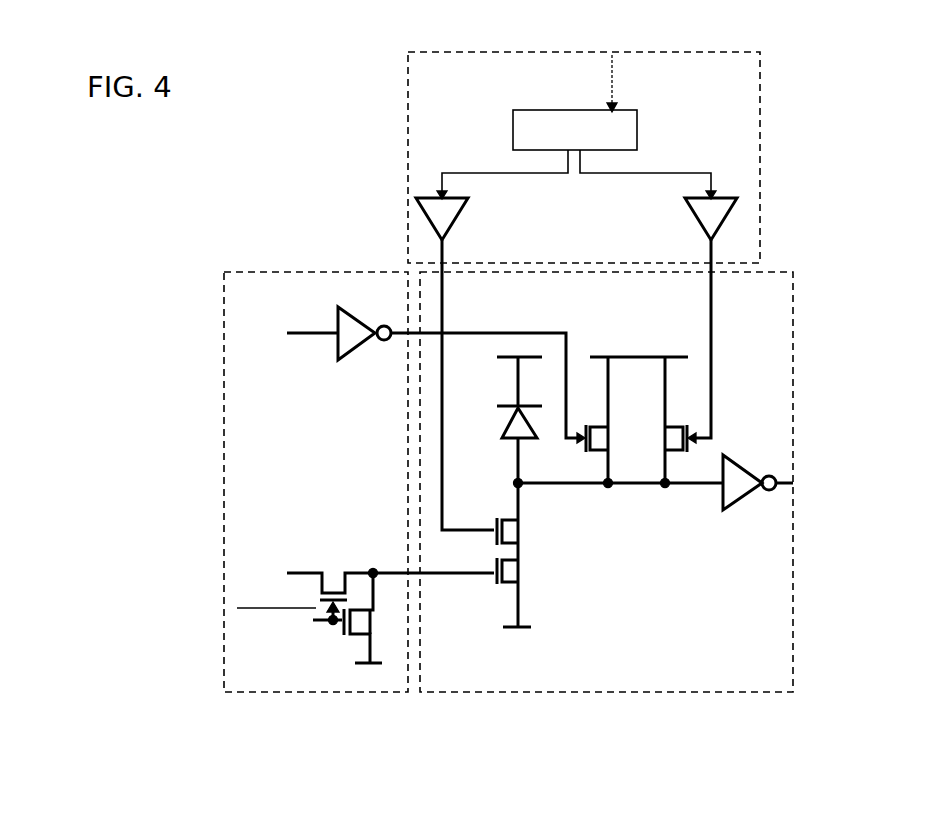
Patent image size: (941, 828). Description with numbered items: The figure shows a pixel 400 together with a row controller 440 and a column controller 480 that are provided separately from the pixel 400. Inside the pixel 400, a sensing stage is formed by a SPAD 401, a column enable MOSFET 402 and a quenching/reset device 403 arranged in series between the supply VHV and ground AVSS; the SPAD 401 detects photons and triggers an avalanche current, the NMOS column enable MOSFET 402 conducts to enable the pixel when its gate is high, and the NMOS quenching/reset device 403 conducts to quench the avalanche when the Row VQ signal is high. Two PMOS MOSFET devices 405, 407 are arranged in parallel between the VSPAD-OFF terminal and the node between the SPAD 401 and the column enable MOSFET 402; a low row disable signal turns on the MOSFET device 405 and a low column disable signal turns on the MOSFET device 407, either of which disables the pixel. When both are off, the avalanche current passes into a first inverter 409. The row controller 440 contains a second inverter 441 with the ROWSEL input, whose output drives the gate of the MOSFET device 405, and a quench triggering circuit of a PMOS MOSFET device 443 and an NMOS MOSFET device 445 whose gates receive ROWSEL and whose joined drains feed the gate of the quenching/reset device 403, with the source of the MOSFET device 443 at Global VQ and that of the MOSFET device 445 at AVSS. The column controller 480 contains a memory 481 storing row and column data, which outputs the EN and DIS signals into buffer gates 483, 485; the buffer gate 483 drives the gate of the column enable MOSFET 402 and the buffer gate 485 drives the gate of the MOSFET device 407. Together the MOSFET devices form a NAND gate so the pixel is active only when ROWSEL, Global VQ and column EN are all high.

The pixel 400 is at (518, 482).
The SPAD 401 is at (505, 422).
The column enable MOSFET 402 is at (525, 520).
The quenching/reset device 403 is at (525, 580).
The MOSFET device 405 is at (610, 427).
The MOSFET device 407 is at (690, 447).
The first inverter 409 is at (750, 493).
The row controller 440 is at (361, 482).
The second inverter 441 is at (338, 318).
The MOSFET device 443 is at (320, 585).
The MOSFET device 445 is at (343, 631).
The column controller 480 is at (583, 157).
The memory 481 is at (513, 120).
The buffer gate 483 is at (437, 235).
The buffer gate 485 is at (730, 215).